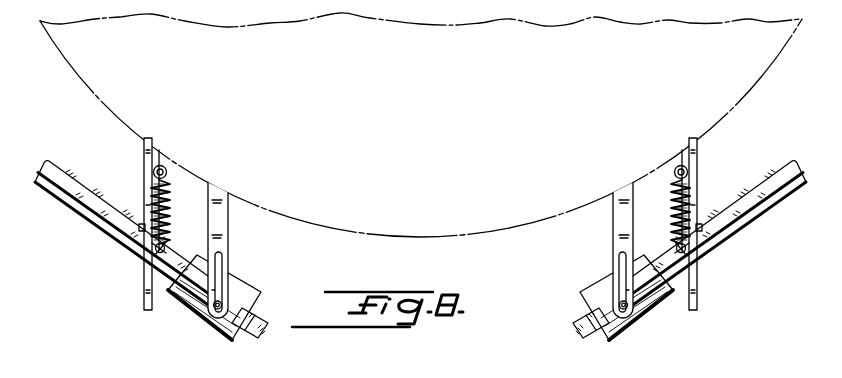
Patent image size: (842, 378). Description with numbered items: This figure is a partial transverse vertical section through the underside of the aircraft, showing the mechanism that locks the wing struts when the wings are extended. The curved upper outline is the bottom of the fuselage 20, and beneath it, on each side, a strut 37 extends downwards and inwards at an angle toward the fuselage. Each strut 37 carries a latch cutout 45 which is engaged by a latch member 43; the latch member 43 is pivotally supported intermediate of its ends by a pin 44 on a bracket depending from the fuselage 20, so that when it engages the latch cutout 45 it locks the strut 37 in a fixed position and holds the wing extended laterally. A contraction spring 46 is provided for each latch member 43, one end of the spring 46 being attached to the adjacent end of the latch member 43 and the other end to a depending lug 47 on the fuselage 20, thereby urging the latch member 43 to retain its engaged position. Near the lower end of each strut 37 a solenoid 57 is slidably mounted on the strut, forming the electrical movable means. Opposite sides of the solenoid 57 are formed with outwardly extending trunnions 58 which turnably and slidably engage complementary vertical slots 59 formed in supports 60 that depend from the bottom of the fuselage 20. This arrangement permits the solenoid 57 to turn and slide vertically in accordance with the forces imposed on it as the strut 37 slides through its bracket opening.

The fuselage 20 is at (452, 236).
The struts 37 is at (82, 212).
The latch members 43 is at (166, 232).
The pins 44 is at (144, 223).
The latch cutouts 45 is at (156, 253).
The contraction springs 46 is at (163, 188).
The depending lugs 47 is at (160, 165).
The solenoids 57 is at (256, 294).
The trunnions 58 is at (215, 334).
The vertical slots 59 is at (222, 268).
The supports 60 is at (228, 235).